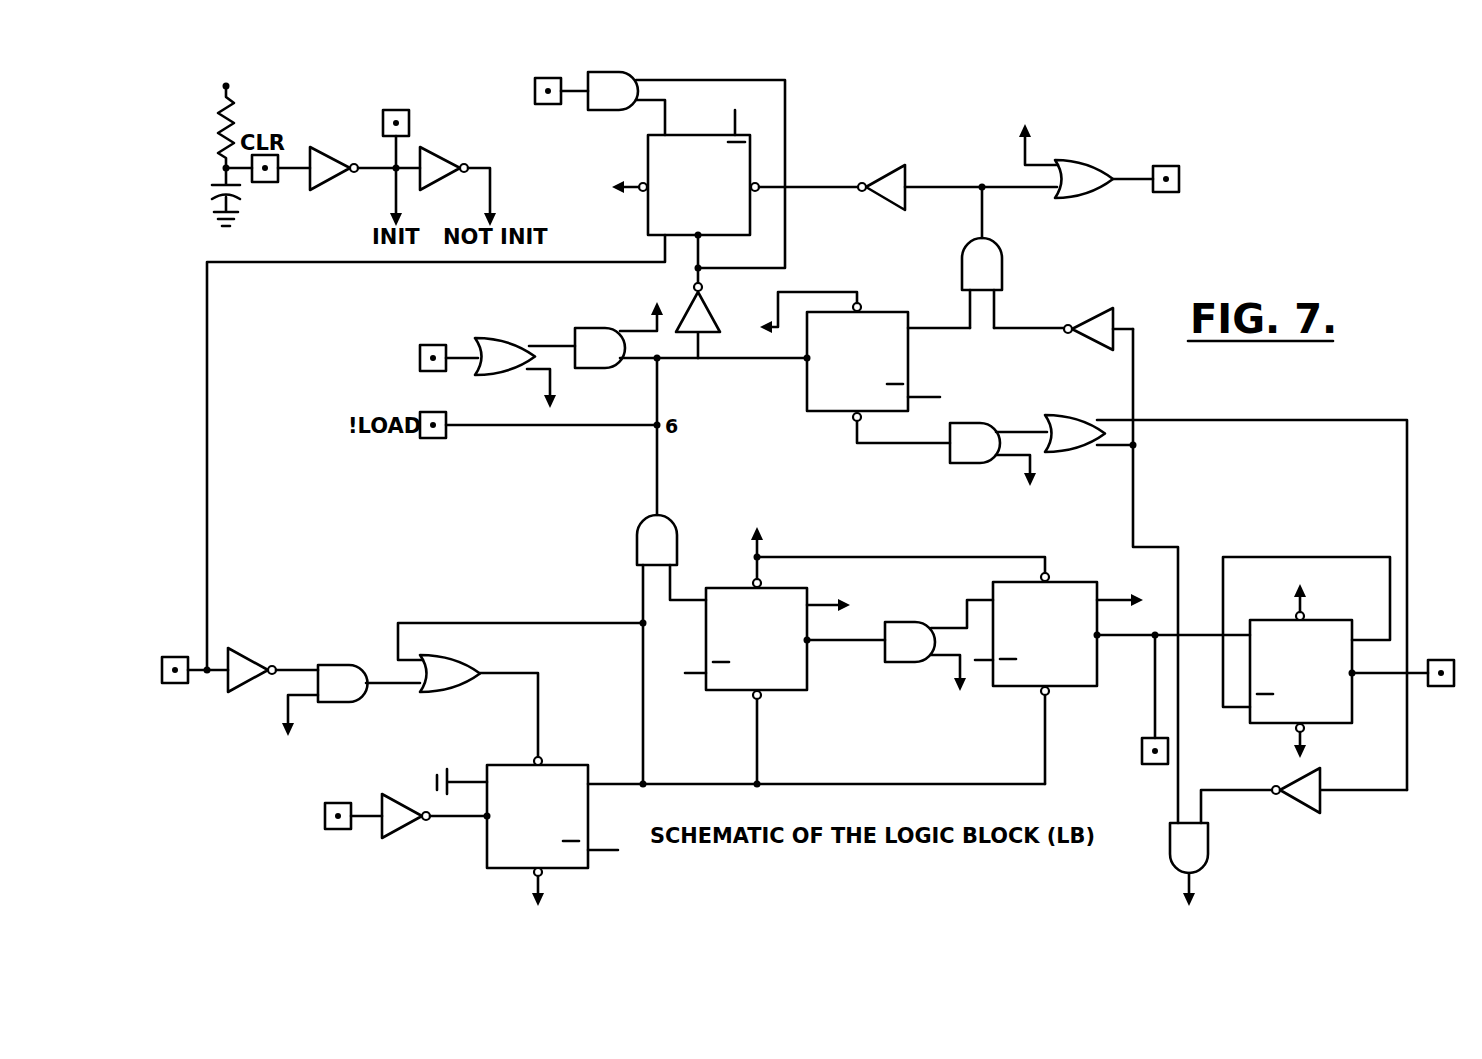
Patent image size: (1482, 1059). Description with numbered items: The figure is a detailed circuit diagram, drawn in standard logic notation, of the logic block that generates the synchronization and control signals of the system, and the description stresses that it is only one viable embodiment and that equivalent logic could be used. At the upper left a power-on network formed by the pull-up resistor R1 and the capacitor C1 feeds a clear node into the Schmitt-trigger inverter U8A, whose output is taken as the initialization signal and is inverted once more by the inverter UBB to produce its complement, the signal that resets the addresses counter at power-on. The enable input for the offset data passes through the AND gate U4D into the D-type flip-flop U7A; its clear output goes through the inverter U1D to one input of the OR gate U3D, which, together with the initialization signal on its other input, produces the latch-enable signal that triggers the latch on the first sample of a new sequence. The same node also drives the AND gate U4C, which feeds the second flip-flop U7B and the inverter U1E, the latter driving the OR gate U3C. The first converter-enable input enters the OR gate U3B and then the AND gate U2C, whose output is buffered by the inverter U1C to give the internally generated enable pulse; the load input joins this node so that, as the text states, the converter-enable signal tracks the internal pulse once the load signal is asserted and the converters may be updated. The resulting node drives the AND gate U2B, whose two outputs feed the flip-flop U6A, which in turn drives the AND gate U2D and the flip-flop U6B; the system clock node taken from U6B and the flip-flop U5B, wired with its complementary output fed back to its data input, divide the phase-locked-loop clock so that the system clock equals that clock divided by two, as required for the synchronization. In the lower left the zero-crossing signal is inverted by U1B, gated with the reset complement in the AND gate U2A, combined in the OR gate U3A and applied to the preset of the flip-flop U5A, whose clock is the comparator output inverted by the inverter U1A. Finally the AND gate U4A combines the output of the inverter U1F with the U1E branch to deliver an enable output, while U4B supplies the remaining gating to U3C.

The pull-up resistor 1K R1 is at (231, 115).
The addresses counter C1 is at (244, 196).
The 7414 Schmitt inverter U8A is at (336, 168).
The 7414 Schmitt inverter UBB is at (446, 168).
The 7408 AND gate U4D is at (628, 155).
The 7474 D flip-flop U7A is at (710, 183).
The 7414 Schmitt inverter U1D is at (944, 182).
The 7432 OR gate U3D is at (1115, 163).
The 7408 AND gate U4C is at (1013, 257).
The 7414 Schmitt inverter U1E is at (1091, 325).
The 7474 D flip-flop U7B is at (881, 362).
The 7408 AND gate U4B is at (1012, 454).
The 7432 OR gate U3C is at (1224, 588).
The 7432 OR gate U3B is at (493, 364).
The 7408 AND gate U2C is at (626, 335).
The 7414 Schmitt inverter U1C is at (715, 315).
The 7408 AND gate U2B is at (688, 647).
The 7474 D flip-flop U6A is at (865, 654).
The 7408 AND gate U2D is at (930, 657).
The 7474 D flip-flop U6B is at (1112, 670).
The 7474 D flip-flop U5B is at (1346, 658).
The 7414 Schmitt inverter U1B is at (238, 671).
The 7408 AND gate U2A is at (330, 700).
The 7432 OR gate U3A is at (520, 690).
The 7414 Schmitt inverter U1A is at (390, 817).
The 7474 D flip-flop U5A is at (741, 818).
The 7408 AND gate U4A is at (1211, 851).
The 7414 Schmitt inverter U1F is at (1327, 795).